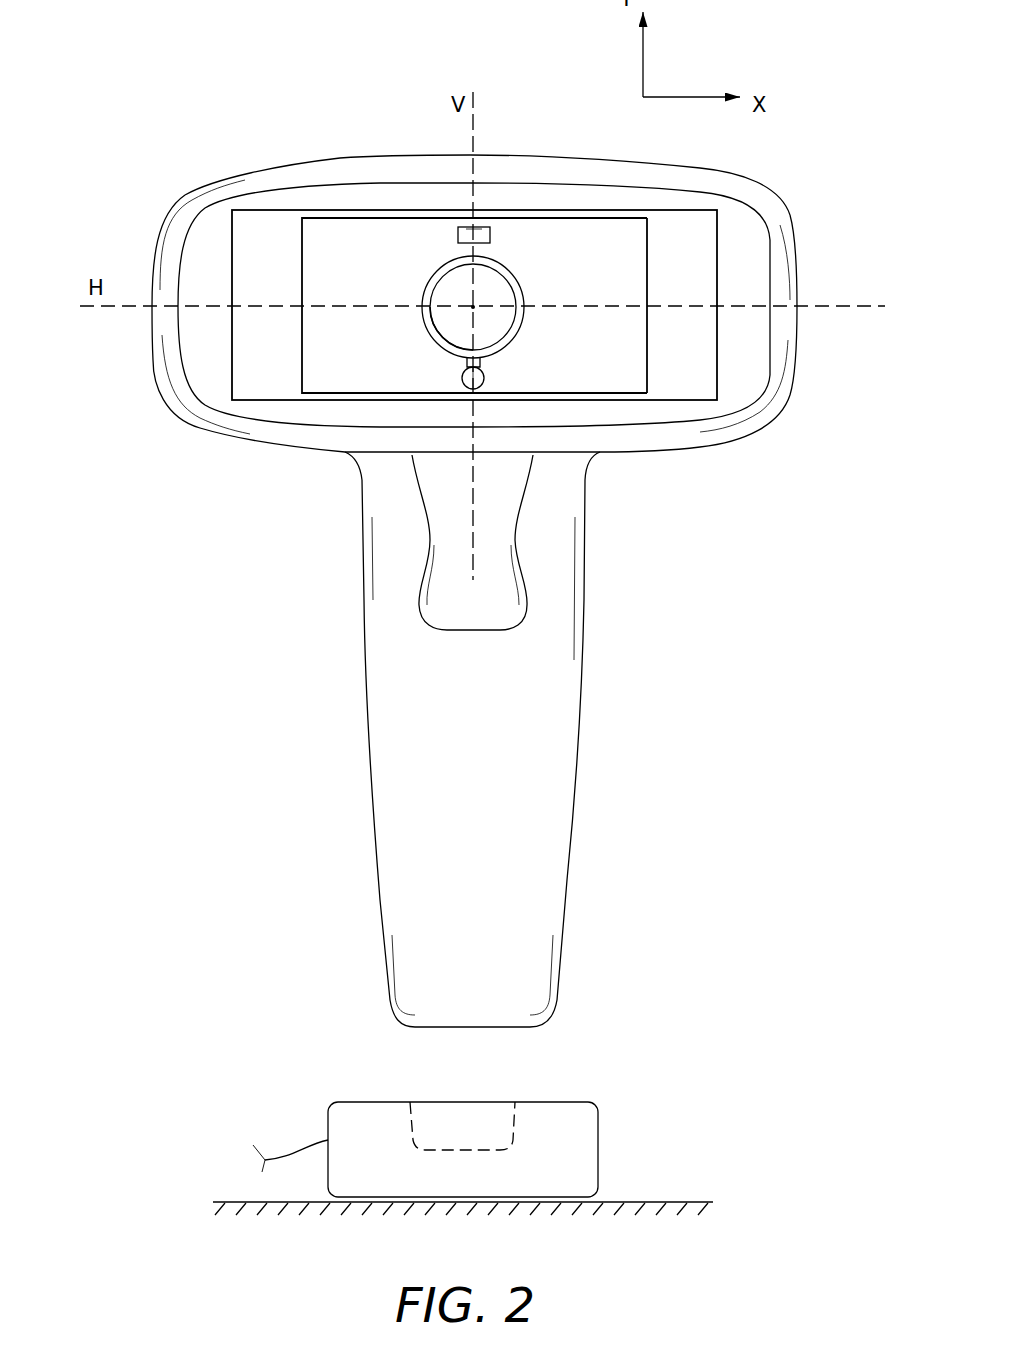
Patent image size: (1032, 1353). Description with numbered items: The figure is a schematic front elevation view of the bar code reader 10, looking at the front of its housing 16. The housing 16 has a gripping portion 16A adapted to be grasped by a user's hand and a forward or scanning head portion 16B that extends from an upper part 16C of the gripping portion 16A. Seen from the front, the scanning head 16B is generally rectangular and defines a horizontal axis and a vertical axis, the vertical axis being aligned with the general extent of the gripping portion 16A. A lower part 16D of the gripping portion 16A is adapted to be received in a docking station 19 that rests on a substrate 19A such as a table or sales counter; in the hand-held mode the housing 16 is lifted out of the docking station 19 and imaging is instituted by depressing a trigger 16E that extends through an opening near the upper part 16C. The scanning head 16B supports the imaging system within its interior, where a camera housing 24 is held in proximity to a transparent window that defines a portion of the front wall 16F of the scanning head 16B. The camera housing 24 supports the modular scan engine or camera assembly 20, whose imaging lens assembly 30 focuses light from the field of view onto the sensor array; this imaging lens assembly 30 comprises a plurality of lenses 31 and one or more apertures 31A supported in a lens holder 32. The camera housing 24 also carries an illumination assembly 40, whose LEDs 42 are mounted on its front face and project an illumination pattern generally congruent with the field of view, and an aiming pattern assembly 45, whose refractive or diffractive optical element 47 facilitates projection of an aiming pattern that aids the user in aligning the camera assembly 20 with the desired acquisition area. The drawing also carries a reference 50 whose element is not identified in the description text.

The reader 10 is at (160, 127).
The housing 16 is at (322, 704).
The gripping portion 16A is at (590, 748).
The scanning head portion 16B is at (812, 385).
The upper part of the gripping portion 16C is at (597, 462).
The lower part of the gripping portion 16D is at (557, 1010).
The trigger 16E is at (452, 567).
The front wall 16F is at (205, 352).
The docking station 19 is at (580, 1102).
The substrate 19A is at (673, 1202).
The camera assembly 20 is at (662, 224).
The camera housing 24 is at (665, 280).
The imaging lens assembly 30 is at (550, 296).
The lenses 31 is at (437, 317).
The apertures 31A is at (445, 283).
The lens holder 32 is at (510, 267).
The illumination assembly 40 is at (510, 236).
The LEDs 42 is at (457, 237).
The aiming pattern assembly 45 is at (510, 378).
The optical element 47 is at (461, 378).
The display frame 50 is at (243, 245).